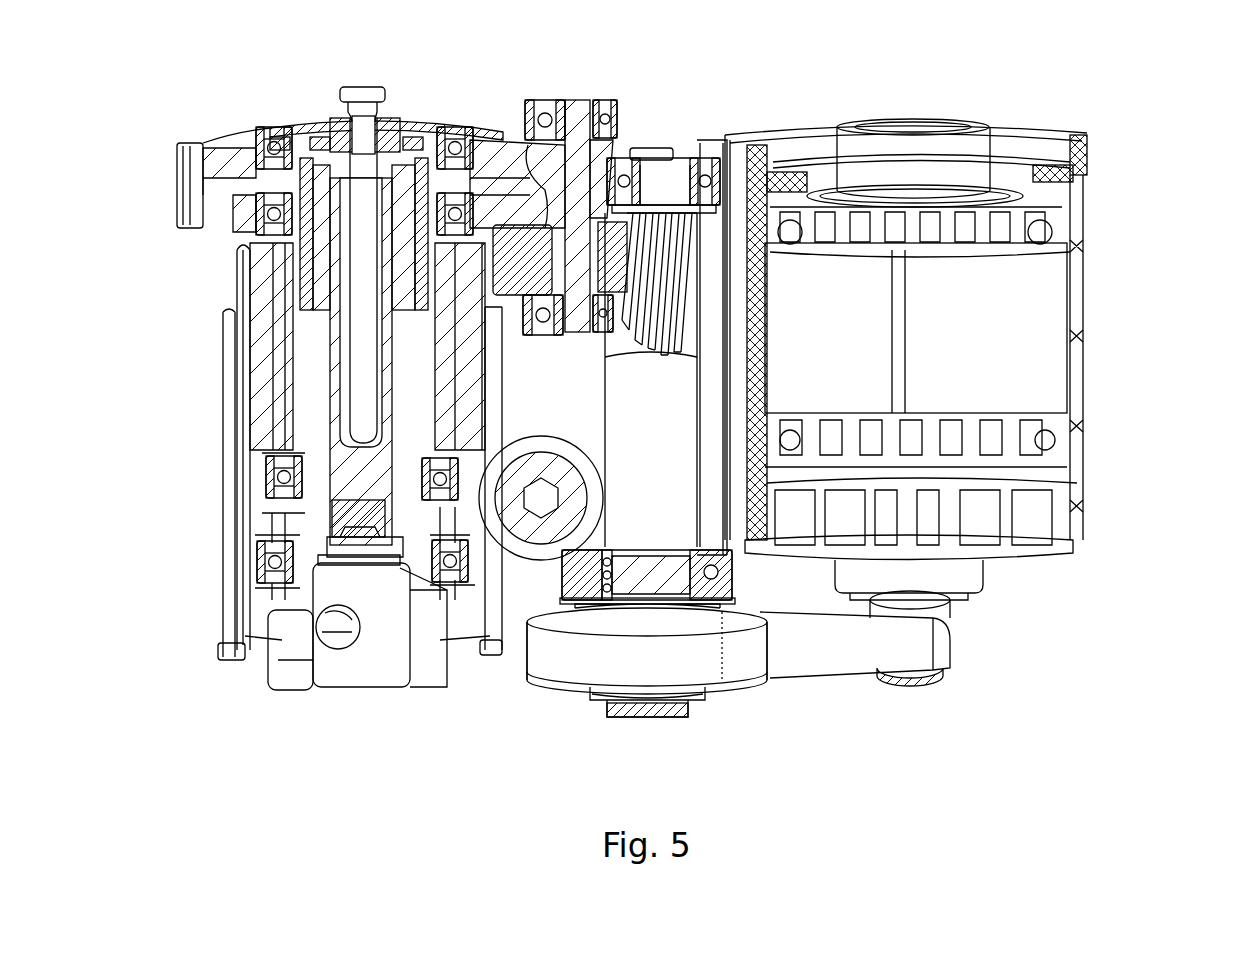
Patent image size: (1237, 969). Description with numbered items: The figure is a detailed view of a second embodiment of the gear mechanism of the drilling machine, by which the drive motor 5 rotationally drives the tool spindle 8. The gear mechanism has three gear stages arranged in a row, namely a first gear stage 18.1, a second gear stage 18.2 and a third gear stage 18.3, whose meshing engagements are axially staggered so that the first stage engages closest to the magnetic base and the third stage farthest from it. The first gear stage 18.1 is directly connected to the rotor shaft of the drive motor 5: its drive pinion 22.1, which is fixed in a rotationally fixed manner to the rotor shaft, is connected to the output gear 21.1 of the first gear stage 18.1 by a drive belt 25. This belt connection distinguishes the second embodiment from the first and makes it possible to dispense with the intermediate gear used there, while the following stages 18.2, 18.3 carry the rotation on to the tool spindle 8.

The drive motor 5 is at (1022, 322).
The tool spindle 8 is at (312, 494).
The first gear stage 18.1 is at (738, 720).
The second gear stage 18.2 is at (633, 252).
The third gear stage 18.3 is at (510, 128).
The output gear 21.1 is at (620, 692).
The drive pinion 22.1 is at (927, 663).
The drive belt 25 is at (822, 648).